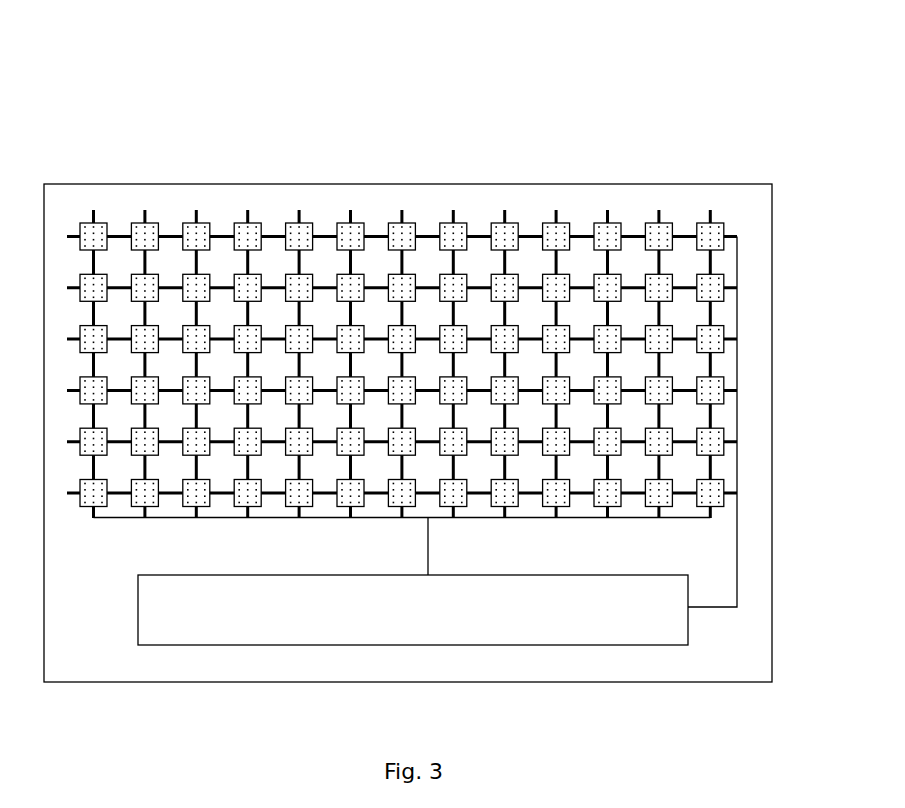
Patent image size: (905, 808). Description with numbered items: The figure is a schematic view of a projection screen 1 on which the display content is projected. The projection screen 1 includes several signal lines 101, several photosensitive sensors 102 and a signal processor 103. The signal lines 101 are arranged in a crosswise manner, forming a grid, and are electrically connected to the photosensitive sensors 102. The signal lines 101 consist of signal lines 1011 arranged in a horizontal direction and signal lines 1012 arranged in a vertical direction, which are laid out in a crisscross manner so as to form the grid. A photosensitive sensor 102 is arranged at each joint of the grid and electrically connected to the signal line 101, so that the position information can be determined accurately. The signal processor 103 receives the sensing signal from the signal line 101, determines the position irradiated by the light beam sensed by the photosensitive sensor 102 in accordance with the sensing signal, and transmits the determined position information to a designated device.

The projection screen 1 is at (268, 200).
The signal lines 101 is at (464, 309).
The signal lines arranged in a horizontal direction 1011 is at (728, 235).
The signal lines arranged in a vertical direction 1012 is at (659, 213).
The photosensitive sensor 102 is at (500, 224).
The signal processor 103 is at (532, 645).